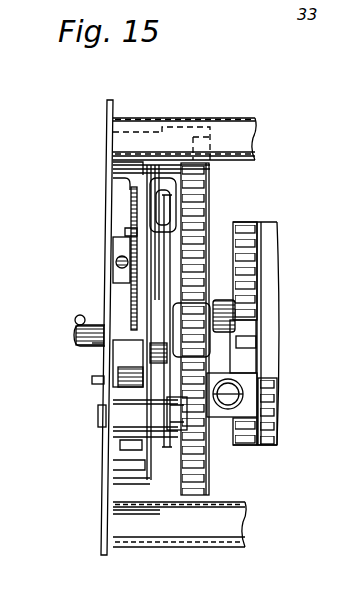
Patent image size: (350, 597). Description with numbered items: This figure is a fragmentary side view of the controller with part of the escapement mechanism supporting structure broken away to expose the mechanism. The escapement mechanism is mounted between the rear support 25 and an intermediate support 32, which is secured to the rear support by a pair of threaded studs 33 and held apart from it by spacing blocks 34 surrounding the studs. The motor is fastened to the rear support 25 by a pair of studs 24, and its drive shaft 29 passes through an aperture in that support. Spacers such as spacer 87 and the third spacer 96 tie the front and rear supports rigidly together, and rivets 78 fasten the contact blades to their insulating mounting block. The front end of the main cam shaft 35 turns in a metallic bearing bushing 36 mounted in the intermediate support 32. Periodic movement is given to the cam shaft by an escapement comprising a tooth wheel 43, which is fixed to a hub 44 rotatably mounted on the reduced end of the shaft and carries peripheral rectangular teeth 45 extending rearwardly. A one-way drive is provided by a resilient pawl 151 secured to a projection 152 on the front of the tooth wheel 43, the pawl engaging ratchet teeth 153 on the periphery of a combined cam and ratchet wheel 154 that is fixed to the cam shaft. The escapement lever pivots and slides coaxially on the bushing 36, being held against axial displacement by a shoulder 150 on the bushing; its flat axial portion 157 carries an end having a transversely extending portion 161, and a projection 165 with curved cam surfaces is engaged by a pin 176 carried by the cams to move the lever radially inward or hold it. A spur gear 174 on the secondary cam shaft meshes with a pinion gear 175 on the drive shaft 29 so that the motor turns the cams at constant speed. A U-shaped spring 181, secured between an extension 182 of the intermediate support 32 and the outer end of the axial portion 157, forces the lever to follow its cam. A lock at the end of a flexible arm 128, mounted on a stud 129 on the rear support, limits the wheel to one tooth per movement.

The third spacer 96 is at (127, 119).
The extension 182 is at (153, 185).
The stud 129 is at (122, 181).
The transversely extending portion 161 is at (131, 193).
The spur gear 174 is at (147, 205).
The U-shaped spring 181 is at (155, 216).
The spacing blocks 34 is at (126, 233).
The spacer 87 is at (130, 250).
The pin 176 is at (142, 288).
The shoulder 150 is at (75, 320).
The studs 24 is at (92, 343).
The bearing bushing 36 is at (122, 360).
The drive shaft 29 is at (92, 383).
The threaded studs 33 is at (100, 412).
The pinion gear 175 is at (150, 437).
The rear support 25 is at (125, 470).
The intermediate support 32 is at (140, 485).
The peripheral rectangular teeth 45 is at (155, 510).
The rivets 78 is at (143, 530).
The flexible arm 128 is at (210, 205).
The projection 165 is at (215, 270).
The ratchet teeth 153 is at (250, 278).
The combined cam and ratchet wheel 154 is at (276, 295).
The axial portion 157 is at (215, 305).
The hub 44 is at (244, 342).
The resilient pawl 151 is at (253, 355).
The main cam shaft 35 is at (245, 365).
The projection 152 is at (252, 398).
The tooth wheel 43 is at (207, 453).